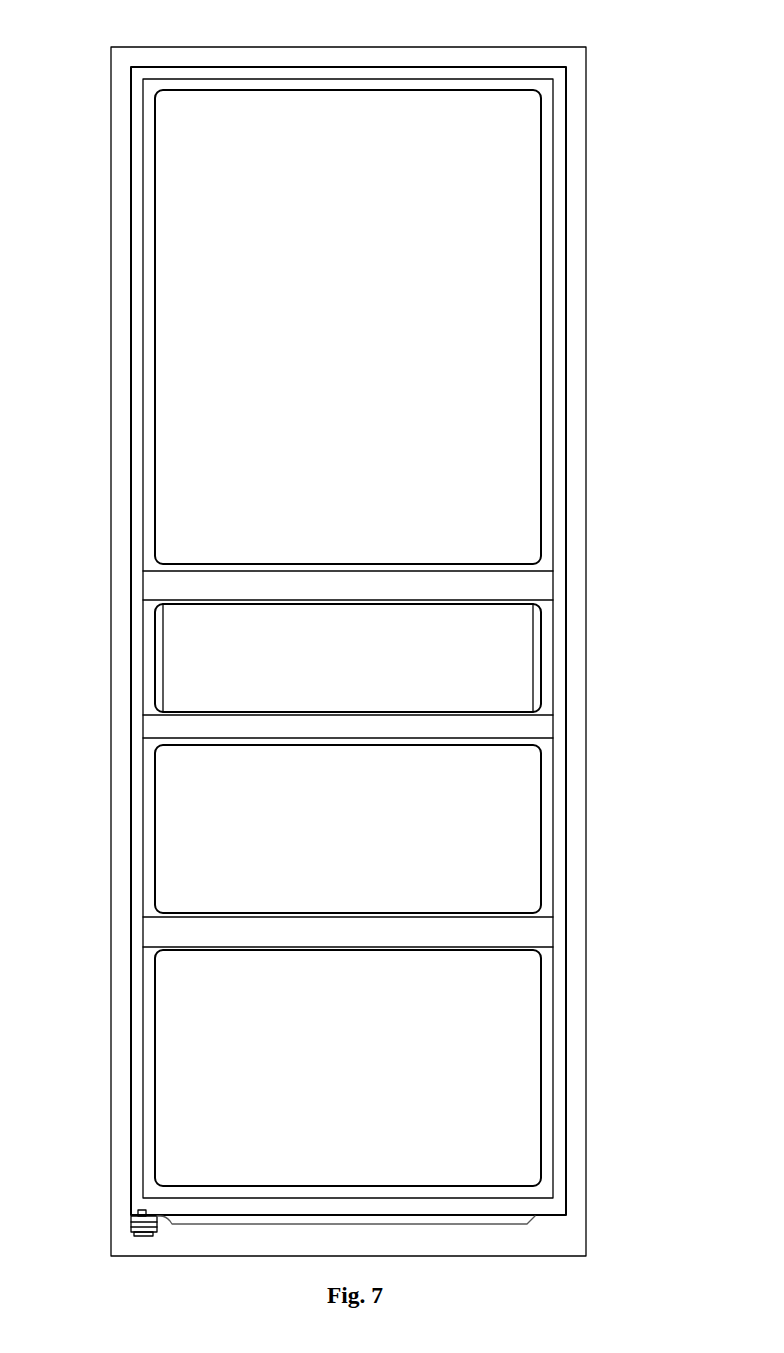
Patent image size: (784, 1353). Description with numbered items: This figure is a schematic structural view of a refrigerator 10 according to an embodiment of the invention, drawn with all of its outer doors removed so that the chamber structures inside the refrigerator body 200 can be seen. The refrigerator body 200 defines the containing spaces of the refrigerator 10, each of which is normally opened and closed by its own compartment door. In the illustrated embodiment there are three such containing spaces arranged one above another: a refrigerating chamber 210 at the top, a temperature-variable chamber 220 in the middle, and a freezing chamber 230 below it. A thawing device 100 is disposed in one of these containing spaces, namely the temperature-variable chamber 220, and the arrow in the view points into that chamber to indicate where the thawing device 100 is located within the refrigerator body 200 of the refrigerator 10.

The refrigerator 10 is at (83, 32).
The thawing device 100 is at (186, 648).
The refrigerator body 200 is at (560, 483).
The refrigerating chamber 210 is at (514, 308).
The temperature-variable chamber 220 is at (536, 642).
The freezing chamber 230 is at (514, 1041).